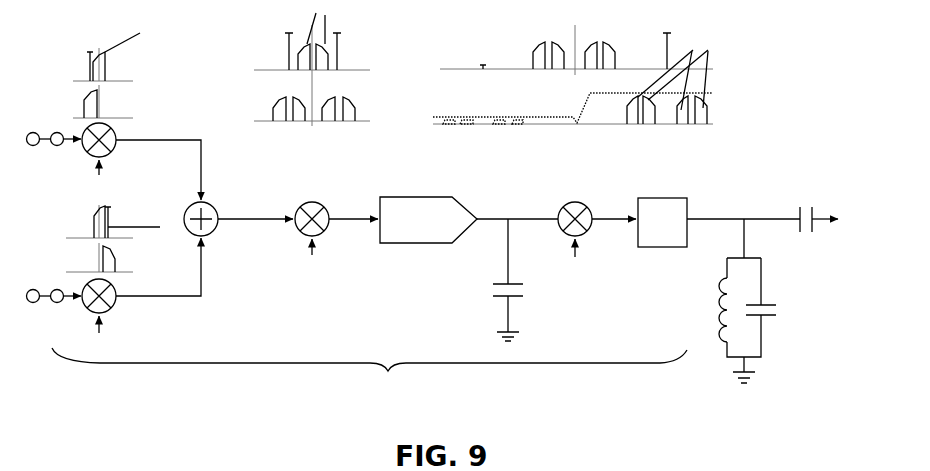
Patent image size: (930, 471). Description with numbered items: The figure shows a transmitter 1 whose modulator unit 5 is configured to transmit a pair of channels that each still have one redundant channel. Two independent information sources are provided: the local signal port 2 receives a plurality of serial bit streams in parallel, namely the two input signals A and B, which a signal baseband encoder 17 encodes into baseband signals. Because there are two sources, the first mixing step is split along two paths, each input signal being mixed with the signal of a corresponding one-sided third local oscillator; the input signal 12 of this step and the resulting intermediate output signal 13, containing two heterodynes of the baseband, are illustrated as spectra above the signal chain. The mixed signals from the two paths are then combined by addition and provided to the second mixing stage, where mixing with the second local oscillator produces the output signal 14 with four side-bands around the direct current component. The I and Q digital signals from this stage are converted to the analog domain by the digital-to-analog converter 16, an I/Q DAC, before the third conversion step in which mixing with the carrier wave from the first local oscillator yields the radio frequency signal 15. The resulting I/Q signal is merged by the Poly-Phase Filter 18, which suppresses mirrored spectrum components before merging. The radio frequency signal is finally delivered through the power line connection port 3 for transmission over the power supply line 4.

The transmitter 1 is at (241, 146).
The local signal port 2 is at (33, 146).
The power line connection port 3 is at (718, 203).
The power supply line 4 is at (821, 224).
The modulator unit 5 is at (369, 385).
The input signal 12 is at (81, 69).
The intermediate output signal 13 is at (81, 99).
The output signal 14 is at (257, 102).
The radio frequency signal 15 is at (446, 102).
The digital-to-analog converter 16 is at (407, 243).
The signal baseband encoder 17 is at (57, 289).
The Poly-Phase Filter 18 is at (661, 247).